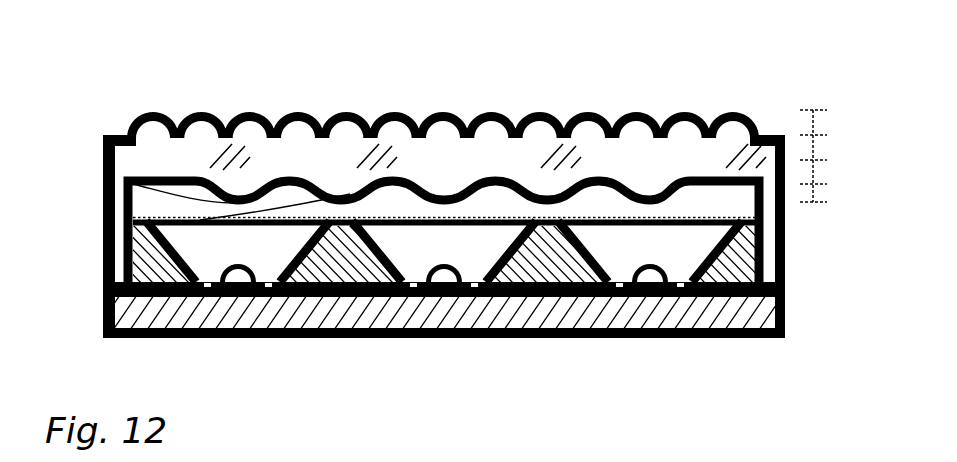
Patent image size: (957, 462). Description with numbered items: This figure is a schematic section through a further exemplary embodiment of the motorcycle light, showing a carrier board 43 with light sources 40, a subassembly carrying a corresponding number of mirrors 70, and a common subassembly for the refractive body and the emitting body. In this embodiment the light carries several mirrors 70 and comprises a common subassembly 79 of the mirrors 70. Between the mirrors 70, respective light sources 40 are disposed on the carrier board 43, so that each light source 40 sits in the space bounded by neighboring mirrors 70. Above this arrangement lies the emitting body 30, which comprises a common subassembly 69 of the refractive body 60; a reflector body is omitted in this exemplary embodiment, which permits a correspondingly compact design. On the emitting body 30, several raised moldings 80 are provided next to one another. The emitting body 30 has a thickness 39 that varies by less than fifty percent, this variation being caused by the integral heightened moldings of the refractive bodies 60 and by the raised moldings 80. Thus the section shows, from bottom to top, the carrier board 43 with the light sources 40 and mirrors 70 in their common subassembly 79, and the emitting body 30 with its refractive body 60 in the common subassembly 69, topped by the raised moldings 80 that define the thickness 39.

The emitting body 30 is at (137, 153).
The thickness 39 is at (250, 112).
The raised moldings 80 is at (628, 118).
The refractive body 60 is at (205, 220).
The common subassembly 69 is at (752, 162).
The carrier board 43 is at (142, 312).
The light sources 40 is at (237, 298).
The mirrors 70 is at (310, 250).
The common subassembly 79 is at (745, 300).